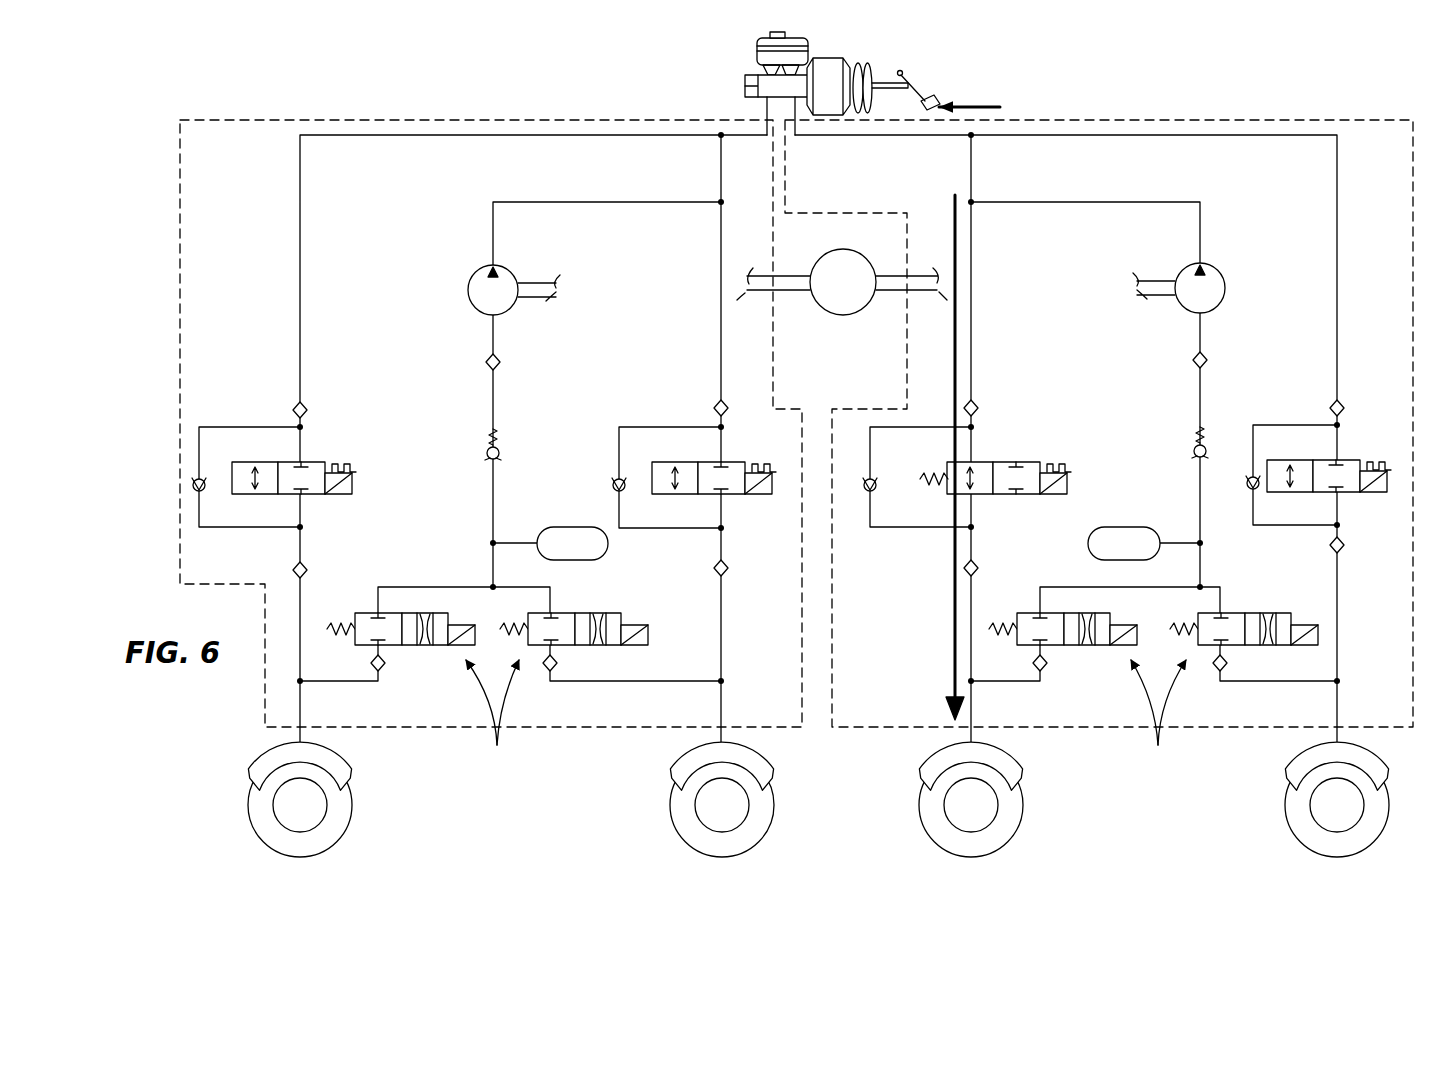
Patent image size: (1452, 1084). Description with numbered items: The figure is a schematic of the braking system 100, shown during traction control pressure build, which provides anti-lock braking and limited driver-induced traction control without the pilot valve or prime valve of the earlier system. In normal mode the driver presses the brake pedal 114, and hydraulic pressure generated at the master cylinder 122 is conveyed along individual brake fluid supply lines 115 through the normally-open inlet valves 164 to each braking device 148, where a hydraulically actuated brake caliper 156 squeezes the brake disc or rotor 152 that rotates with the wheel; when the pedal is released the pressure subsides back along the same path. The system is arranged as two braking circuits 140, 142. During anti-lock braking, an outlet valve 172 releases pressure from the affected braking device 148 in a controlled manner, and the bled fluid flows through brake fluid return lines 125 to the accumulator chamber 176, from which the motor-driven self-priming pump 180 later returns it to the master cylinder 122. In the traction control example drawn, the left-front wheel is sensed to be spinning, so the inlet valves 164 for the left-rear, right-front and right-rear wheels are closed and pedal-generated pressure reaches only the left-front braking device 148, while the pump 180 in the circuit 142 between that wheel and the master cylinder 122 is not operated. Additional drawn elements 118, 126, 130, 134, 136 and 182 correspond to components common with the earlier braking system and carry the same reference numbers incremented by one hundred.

The braking system 100 is at (206, 75).
The brake pedal 114 is at (936, 100).
The brake fluid supply lines 115 is at (300, 312).
The push rod 118 is at (886, 82).
The master cylinder 122 is at (858, 45).
The brake fluid return lines 125 is at (445, 587).
The fluid reservoir 126 is at (757, 46).
The master cylinder 130 is at (752, 86).
The first master cylinder output 134 is at (766, 106).
The second master cylinder output 136 is at (797, 100).
The braking circuit 140 is at (430, 118).
The braking circuit 142 is at (1135, 118).
The braking device 148 is at (242, 822).
The brake disc or rotor 152 is at (337, 820).
The brake caliper 156 is at (262, 768).
The inlet valves 164 is at (328, 447).
The outlet valves 172 is at (826, 719).
The accumulator chamber 176 is at (572, 530).
The pump 180 is at (513, 268).
The motor 182 is at (848, 316).